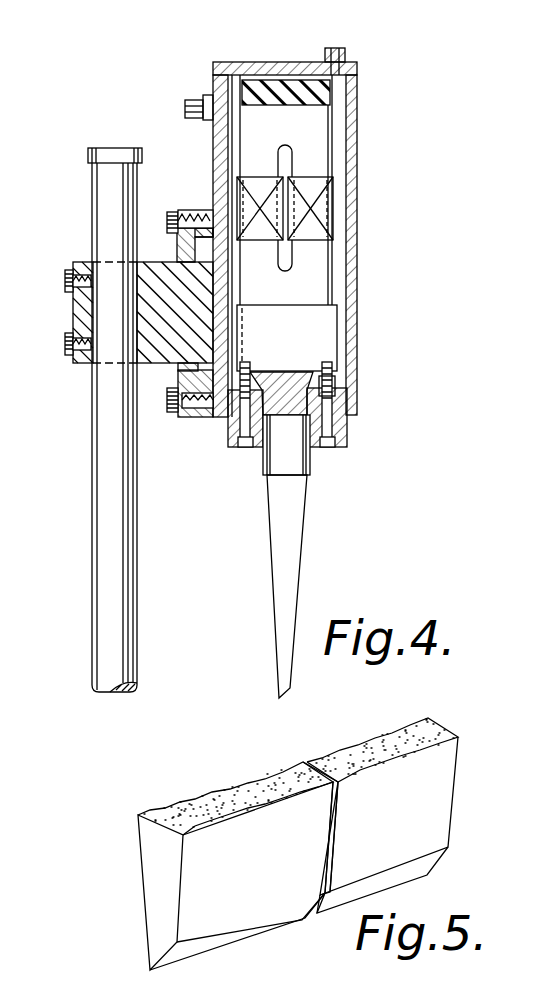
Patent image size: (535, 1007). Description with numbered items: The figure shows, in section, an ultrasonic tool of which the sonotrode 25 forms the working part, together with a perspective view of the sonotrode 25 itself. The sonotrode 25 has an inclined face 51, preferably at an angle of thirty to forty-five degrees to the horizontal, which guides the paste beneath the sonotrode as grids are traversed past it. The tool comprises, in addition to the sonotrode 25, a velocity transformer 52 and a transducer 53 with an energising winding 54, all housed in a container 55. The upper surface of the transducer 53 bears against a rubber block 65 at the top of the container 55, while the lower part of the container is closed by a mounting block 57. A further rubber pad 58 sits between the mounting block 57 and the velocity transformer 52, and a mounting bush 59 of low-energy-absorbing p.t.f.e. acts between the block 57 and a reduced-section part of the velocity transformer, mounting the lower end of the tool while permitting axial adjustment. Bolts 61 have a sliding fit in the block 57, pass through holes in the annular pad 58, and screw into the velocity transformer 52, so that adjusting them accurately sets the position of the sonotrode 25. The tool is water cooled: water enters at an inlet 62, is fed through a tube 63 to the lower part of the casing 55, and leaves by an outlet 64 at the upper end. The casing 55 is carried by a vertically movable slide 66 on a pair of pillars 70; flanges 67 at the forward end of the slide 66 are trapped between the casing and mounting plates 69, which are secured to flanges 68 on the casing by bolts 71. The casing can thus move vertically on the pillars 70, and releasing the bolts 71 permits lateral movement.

In FIG. 4, the sonotrode 25 is at (293, 540).
In FIG. 5, the sonotrode 25 is at (153, 879).
In FIG. 5, the inclined face 51 is at (265, 922).
In FIG. 4, the velocity transformer 52 is at (324, 347).
In FIG. 4, the transducer 53 is at (315, 272).
In FIG. 4, the energising winding 54 is at (330, 212).
In FIG. 4, the container 55 is at (352, 165).
In FIG. 4, the mounting block 57 is at (357, 403).
In FIG. 4, the rubber pad 58 is at (336, 397).
In FIG. 4, the mounting bush 59 is at (310, 440).
In FIG. 4, the bolt 61 is at (334, 425).
In FIG. 4, the water inlet 62 is at (196, 100).
In FIG. 4, the tube 63 is at (237, 303).
In FIG. 4, the outlet 64 is at (345, 50).
In FIG. 4, the rubber block 65 is at (320, 87).
In FIG. 4, the slide 66 is at (85, 318).
In FIG. 4, the flange 67 is at (208, 250).
In FIG. 4, the flange 68 is at (235, 115).
In FIG. 4, the mounting plate 69 is at (178, 375).
In FIG. 4, the pillar 70 is at (91, 432).
In FIG. 4, the bolt 71 is at (213, 208).